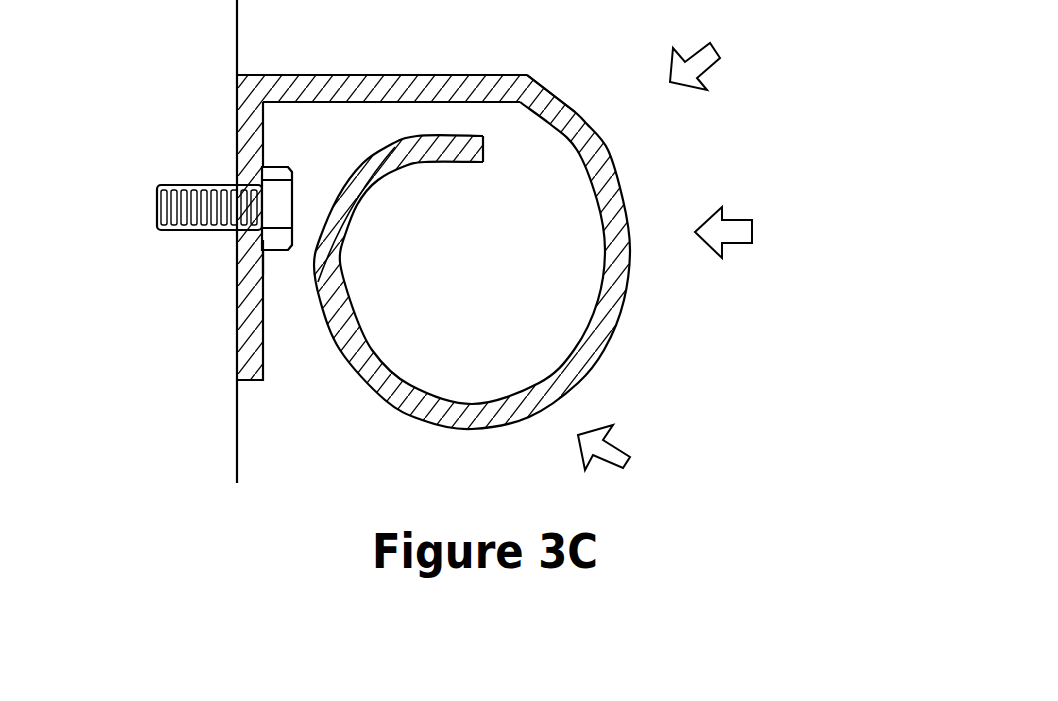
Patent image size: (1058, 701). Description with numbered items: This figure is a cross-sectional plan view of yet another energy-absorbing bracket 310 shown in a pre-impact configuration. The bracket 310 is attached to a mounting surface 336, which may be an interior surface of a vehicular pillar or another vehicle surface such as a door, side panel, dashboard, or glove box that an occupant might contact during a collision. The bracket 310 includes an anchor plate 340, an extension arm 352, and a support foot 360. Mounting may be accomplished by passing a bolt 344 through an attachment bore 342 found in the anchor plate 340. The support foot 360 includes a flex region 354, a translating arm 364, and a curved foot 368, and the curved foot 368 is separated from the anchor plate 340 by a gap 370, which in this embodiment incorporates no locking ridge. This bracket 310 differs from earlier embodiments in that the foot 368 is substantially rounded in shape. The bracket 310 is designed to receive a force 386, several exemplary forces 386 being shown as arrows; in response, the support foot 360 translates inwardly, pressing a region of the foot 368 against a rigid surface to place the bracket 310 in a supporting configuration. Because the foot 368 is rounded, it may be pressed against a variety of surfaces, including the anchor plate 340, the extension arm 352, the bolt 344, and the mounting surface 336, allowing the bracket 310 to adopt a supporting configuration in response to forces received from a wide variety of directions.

The energy-absorbing bracket 310 is at (709, 137).
The mounting surface 336 is at (207, 362).
The anchor plate 340 is at (244, 132).
The attachment bore 342 is at (240, 258).
The bolt 344 is at (182, 200).
The extension arm 352 is at (437, 85).
The flex region 354 is at (590, 83).
The support foot 360 is at (684, 299).
The translating arm 364 is at (577, 362).
The curved foot 368 is at (483, 438).
The gap 370 is at (273, 441).
The force 386 is at (712, 44).